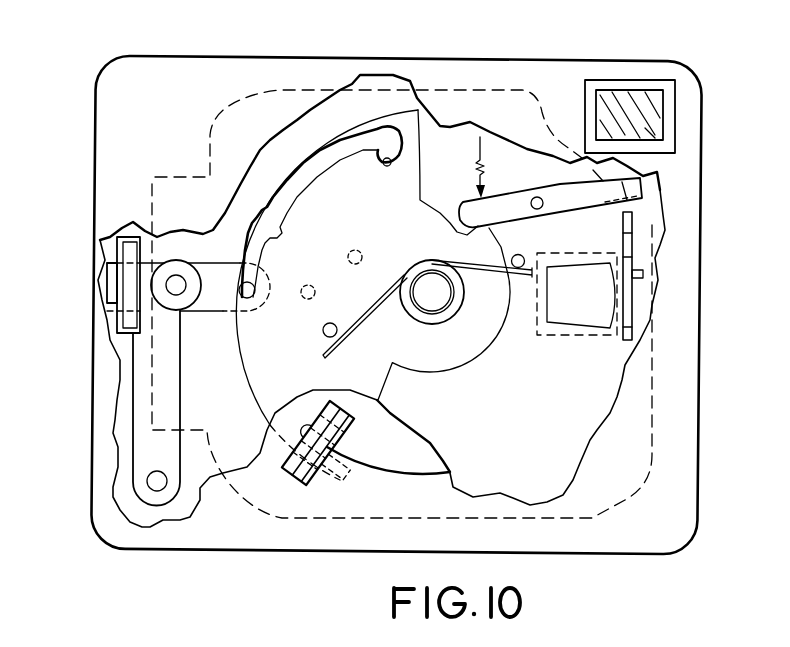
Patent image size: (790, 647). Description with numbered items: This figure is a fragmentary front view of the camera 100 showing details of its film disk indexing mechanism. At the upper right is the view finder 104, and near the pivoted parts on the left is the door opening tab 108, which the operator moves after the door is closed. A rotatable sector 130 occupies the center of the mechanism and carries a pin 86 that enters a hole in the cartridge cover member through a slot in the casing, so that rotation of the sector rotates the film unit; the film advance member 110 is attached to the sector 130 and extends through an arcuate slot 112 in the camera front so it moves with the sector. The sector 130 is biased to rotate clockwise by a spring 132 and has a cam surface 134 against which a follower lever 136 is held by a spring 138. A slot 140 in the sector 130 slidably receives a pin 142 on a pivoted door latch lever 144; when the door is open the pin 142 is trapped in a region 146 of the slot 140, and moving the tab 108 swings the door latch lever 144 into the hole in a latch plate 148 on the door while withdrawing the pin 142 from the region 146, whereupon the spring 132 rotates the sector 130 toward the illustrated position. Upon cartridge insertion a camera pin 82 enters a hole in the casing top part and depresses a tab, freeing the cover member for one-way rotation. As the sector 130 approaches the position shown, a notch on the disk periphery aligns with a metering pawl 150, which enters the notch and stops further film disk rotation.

The camera 100 is at (183, 40).
The view finder 104 is at (625, 95).
The door opening tab 108 is at (178, 265).
The film advance member 110 is at (305, 445).
The arcuate slot 112 is at (386, 480).
The sector 130 is at (295, 370).
The spring 132 is at (378, 294).
The cam surface 134 is at (494, 340).
The follower lever 136 is at (645, 183).
The spring 138 is at (477, 164).
The slot 140 is at (264, 242).
The pin 142 is at (253, 284).
The door latch lever 144 is at (147, 365).
The region of slot 146 is at (387, 167).
The latch plate 148 is at (130, 237).
The metering pawl 150 is at (625, 334).
The camera pin 82 is at (305, 299).
The pin 86 is at (361, 251).